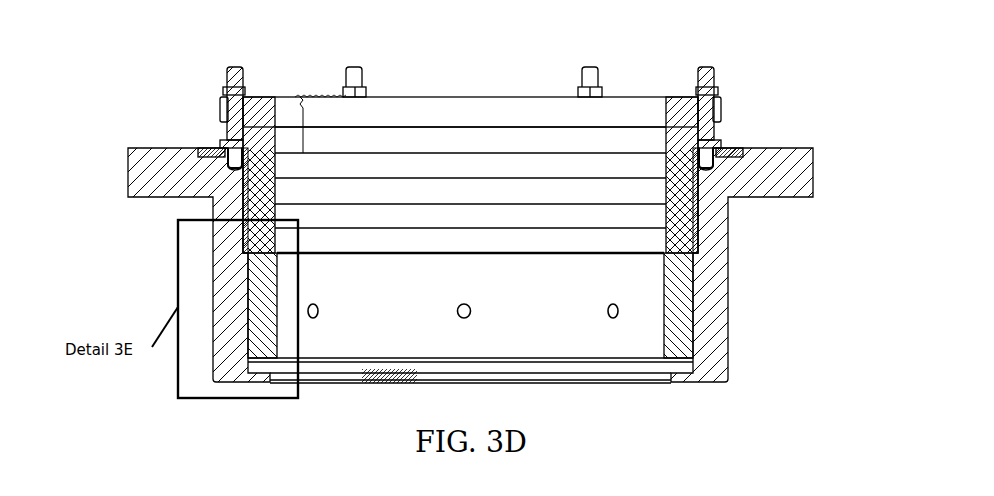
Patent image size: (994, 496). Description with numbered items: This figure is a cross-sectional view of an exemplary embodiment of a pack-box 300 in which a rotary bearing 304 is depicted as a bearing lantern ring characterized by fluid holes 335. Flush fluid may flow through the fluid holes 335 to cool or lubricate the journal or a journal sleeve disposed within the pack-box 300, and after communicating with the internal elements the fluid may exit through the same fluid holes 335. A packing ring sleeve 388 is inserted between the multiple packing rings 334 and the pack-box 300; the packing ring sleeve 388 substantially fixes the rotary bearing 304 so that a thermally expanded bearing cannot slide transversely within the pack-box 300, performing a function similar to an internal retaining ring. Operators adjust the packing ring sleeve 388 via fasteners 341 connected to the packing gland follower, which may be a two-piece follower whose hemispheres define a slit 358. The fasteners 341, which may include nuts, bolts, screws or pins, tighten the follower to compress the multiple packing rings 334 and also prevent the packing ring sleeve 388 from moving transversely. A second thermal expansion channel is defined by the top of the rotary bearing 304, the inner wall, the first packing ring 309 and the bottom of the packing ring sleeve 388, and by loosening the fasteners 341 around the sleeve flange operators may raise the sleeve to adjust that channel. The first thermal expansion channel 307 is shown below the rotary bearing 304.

The pack-box 300 is at (787, 163).
The rotary bearing 304 is at (408, 345).
The first thermal expansion channel 307 is at (357, 365).
The first packing ring 309 is at (678, 245).
The multiple packing rings 334 is at (680, 217).
The fluid holes 335 is at (625, 312).
The fasteners 341 is at (706, 76).
The slit 358 is at (303, 108).
The packing ring sleeve 388 is at (243, 206).